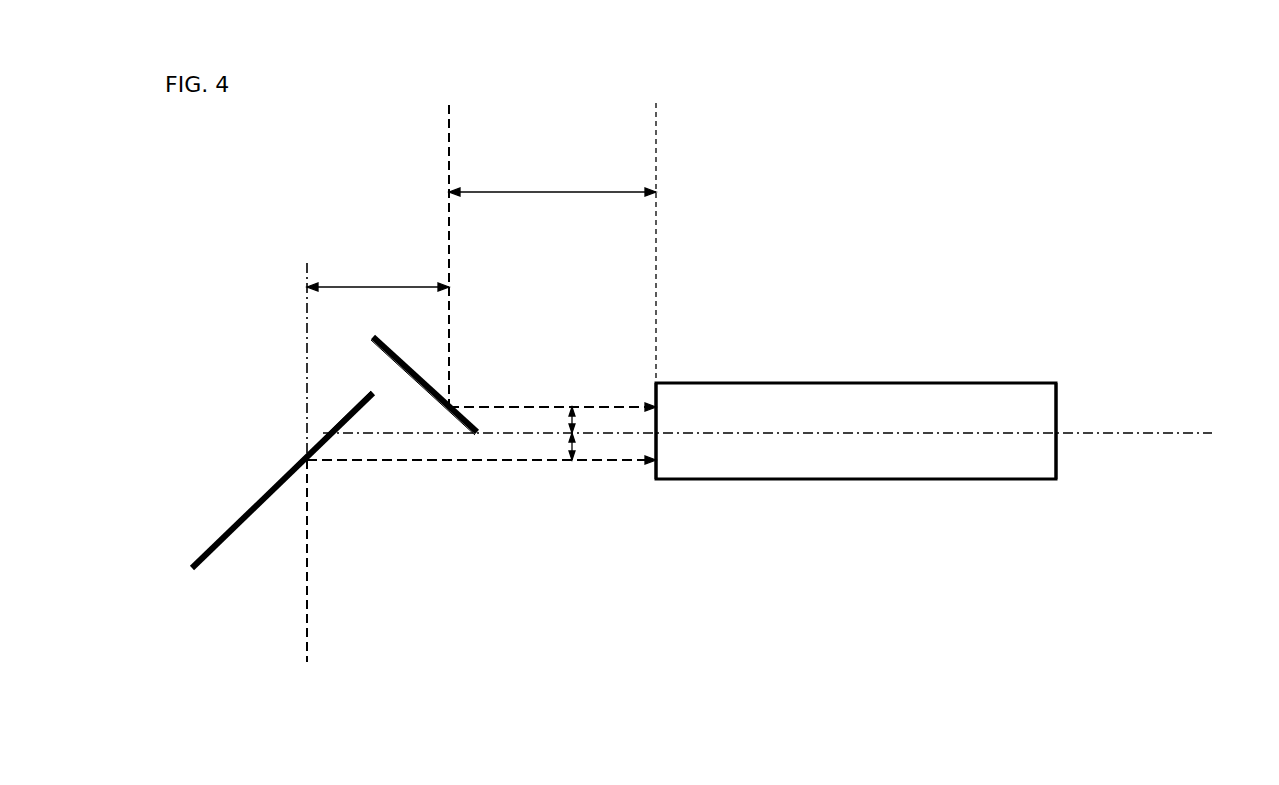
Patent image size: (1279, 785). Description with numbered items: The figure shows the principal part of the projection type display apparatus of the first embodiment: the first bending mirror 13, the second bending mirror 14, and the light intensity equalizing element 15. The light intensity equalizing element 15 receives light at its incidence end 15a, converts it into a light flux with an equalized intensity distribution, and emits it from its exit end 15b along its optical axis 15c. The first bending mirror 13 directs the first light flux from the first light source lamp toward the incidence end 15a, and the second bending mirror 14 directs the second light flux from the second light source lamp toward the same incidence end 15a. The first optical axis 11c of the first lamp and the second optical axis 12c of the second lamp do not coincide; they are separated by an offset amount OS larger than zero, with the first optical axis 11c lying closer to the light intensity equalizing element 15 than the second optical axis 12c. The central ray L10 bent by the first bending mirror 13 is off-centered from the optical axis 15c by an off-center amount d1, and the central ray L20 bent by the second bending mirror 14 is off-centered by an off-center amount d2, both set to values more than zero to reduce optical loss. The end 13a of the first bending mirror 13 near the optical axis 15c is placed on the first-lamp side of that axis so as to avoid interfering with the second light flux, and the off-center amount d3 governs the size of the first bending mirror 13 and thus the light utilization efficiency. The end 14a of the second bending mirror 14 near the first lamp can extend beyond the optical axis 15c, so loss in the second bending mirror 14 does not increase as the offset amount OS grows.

The first optical axis 11c is at (463, 134).
The second optical axis 12c is at (321, 657).
The first bending mirror 13 is at (390, 360).
The end of the first bending mirror 13a is at (480, 427).
The second bending mirror 14 is at (214, 546).
The end of the second bending mirror 14a is at (373, 392).
The light intensity equalizing element 15 is at (907, 383).
The incidence end 15a is at (655, 478).
The exit end 15b is at (1056, 478).
The optical axis of the light intensity equalizing element 15c is at (1168, 427).
The central ray of the first light flux L10 is at (537, 405).
The central ray of the second light flux L20 is at (500, 462).
The off-center amount d1 is at (577, 417).
The off-center amount d2 is at (578, 447).
The off-center amount d3 is at (552, 243).
The offset amount OS is at (378, 272).